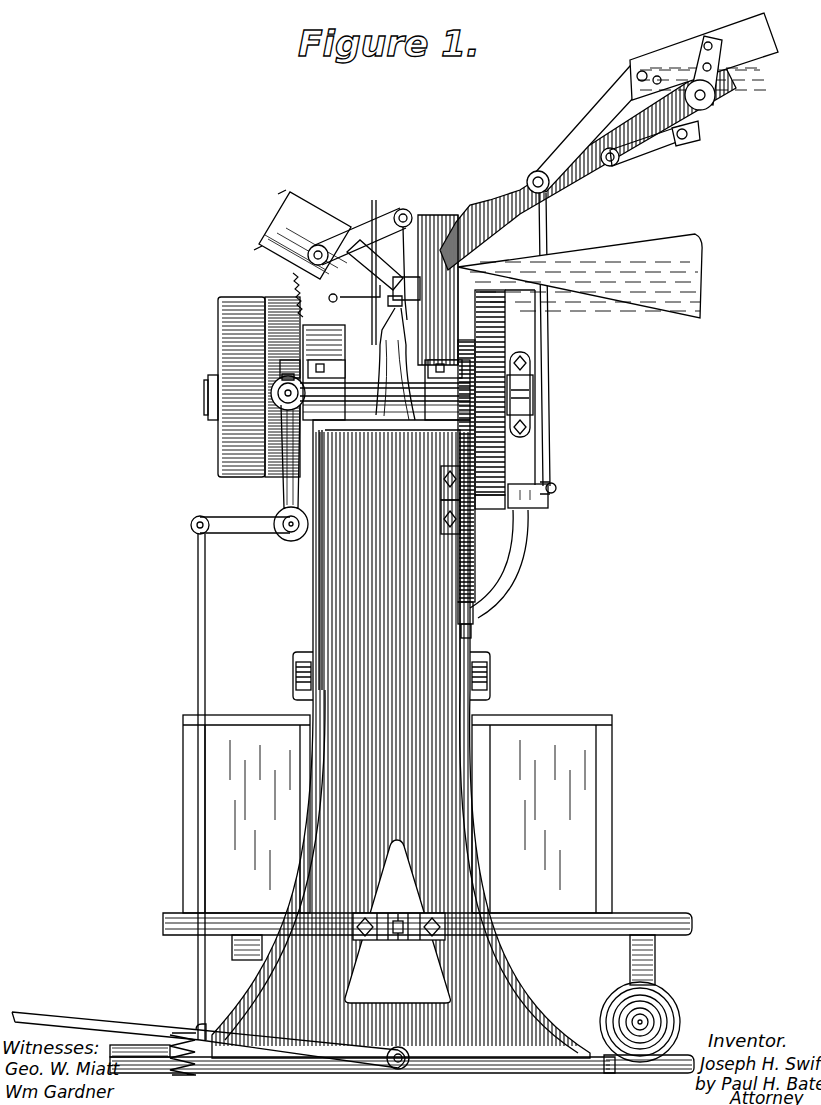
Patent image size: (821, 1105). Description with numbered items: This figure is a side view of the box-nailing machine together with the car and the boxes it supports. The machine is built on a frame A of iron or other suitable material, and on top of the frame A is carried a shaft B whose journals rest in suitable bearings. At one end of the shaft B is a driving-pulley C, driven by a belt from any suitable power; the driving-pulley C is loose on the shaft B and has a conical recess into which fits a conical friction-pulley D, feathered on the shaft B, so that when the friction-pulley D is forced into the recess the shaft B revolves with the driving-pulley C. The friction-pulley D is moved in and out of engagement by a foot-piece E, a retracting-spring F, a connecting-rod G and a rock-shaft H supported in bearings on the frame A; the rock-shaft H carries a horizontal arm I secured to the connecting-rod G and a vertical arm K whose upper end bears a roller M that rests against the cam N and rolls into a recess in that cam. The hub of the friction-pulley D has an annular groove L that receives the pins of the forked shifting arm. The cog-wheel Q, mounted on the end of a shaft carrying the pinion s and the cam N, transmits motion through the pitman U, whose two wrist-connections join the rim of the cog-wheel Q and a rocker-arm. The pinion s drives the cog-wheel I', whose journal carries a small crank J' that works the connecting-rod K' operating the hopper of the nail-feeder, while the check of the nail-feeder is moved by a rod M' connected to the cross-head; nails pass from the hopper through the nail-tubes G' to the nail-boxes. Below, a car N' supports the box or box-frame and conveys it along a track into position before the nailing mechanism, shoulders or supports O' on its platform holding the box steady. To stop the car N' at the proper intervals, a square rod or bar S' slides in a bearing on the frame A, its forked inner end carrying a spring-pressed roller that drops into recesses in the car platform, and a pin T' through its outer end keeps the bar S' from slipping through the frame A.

The frame A is at (398, 622).
The shaft B is at (385, 372).
The driving-pulley C is at (234, 387).
The conical friction-pulley D is at (272, 302).
The foot-piece E is at (110, 1020).
The retracting-spring F is at (165, 1078).
The connecting-rod G is at (191, 787).
The rock-shaft H is at (278, 538).
The horizontal arm I is at (274, 537).
The connecting-rod K' is at (278, 462).
The annular groove L is at (290, 375).
The roller M is at (229, 367).
The cam N is at (332, 284).
The cog-wheel Q is at (190, 340).
The nail-tubes G' is at (383, 358).
The rod M' is at (482, 339).
The pinion s is at (458, 486).
The pitman U is at (520, 384).
The vertical arm K is at (537, 387).
The small crank J' is at (562, 487).
The cog-wheel I' is at (509, 551).
The shoulders or supports O' is at (403, 814).
The car N' is at (427, 939).
The square metal rod or bar S' is at (399, 950).
The pin T' is at (401, 949).